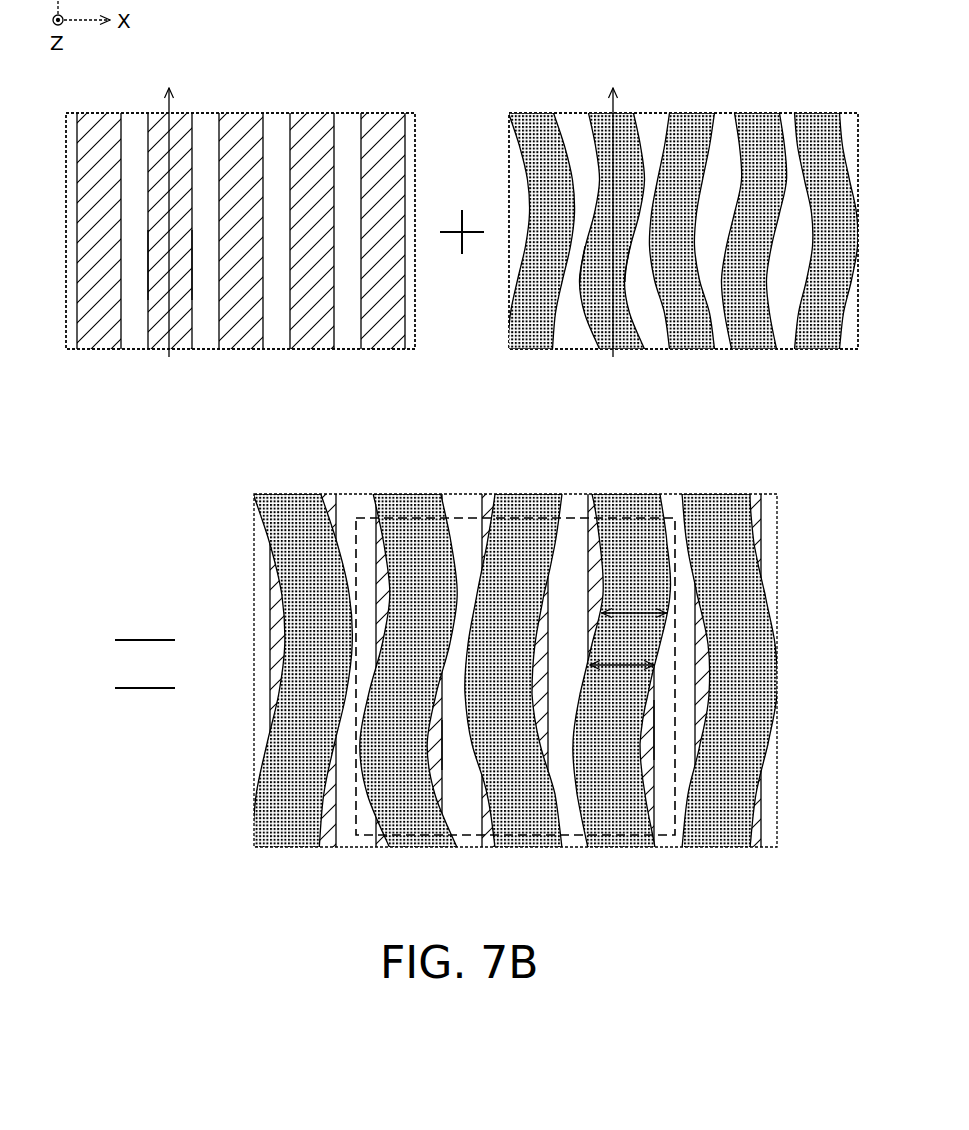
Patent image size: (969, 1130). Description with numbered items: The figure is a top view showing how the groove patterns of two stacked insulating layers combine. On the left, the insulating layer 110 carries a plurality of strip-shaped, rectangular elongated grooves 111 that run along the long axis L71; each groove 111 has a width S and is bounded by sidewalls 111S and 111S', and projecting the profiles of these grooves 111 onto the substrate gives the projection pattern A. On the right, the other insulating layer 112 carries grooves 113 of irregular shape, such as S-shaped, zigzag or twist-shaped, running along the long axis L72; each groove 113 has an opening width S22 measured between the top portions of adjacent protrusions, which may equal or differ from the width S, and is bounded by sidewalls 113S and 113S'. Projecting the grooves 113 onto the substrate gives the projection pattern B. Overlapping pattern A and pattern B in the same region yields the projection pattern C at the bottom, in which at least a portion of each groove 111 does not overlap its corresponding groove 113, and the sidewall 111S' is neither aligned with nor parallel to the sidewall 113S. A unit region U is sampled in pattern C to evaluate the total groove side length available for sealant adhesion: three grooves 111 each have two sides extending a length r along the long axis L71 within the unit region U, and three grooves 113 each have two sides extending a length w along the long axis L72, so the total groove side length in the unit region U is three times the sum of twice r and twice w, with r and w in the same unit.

The insulating layer 110 is at (409, 122).
The grooves 111 is at (382, 126).
The sidewall 111S' is at (105, 308).
The sidewall 111S is at (229, 308).
The long axis L71 is at (168, 243).
The projection pattern A is at (241, 112).
The insulating layer 112 is at (845, 122).
The grooves 113 is at (818, 126).
The sidewall 113S' is at (549, 316).
The sidewall 113S is at (670, 316).
The long axis L72 is at (610, 243).
The projection pattern B is at (683, 112).
The projection pattern C is at (780, 566).
The opening width S22 is at (628, 610).
The width S is at (622, 650).
The length w is at (643, 727).
The unit region U is at (660, 812).
The length r is at (438, 742).